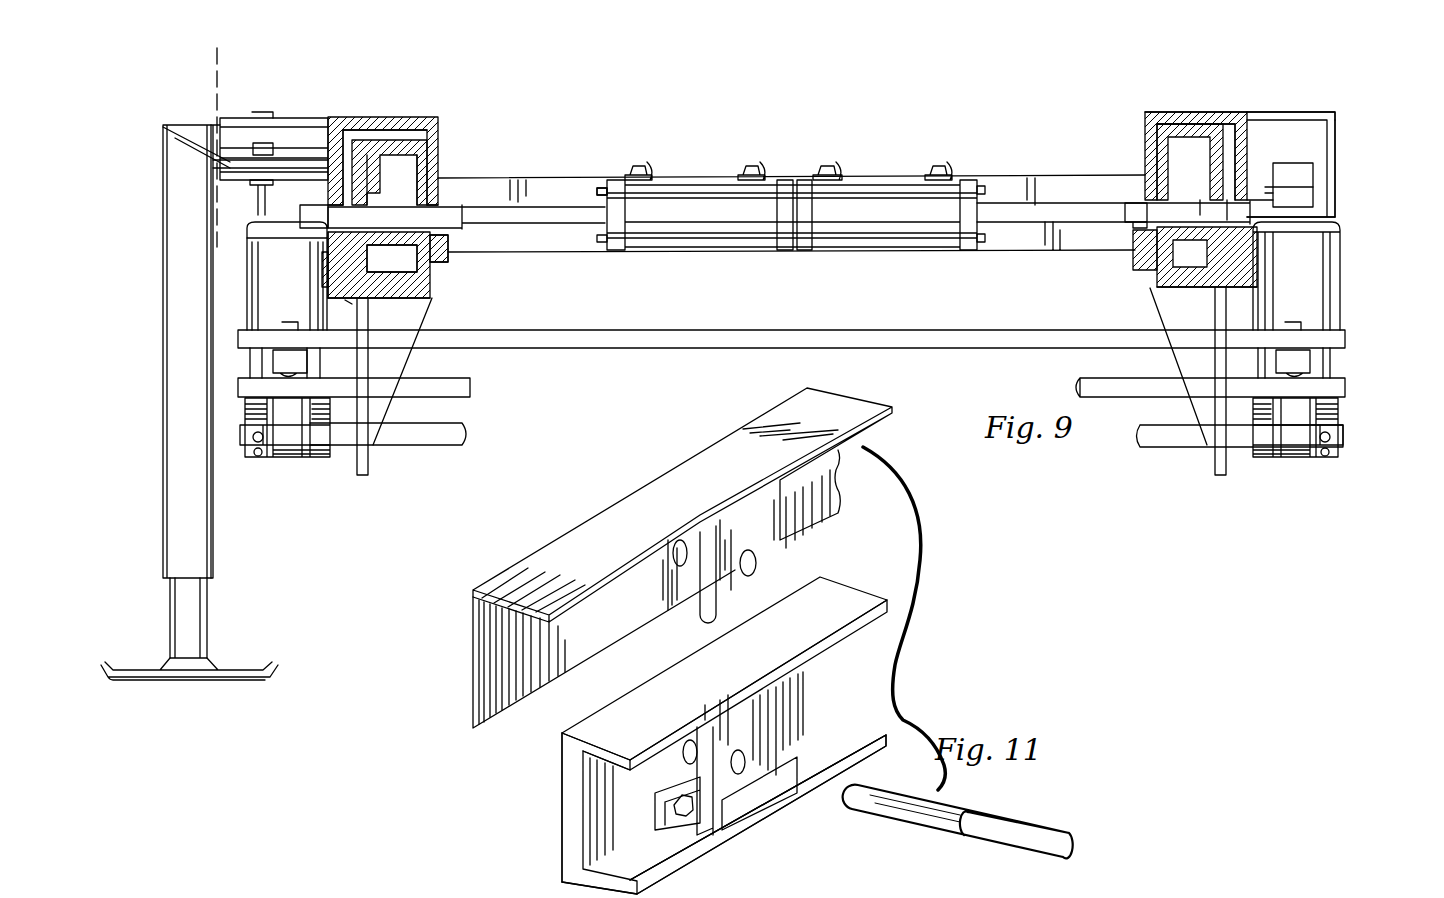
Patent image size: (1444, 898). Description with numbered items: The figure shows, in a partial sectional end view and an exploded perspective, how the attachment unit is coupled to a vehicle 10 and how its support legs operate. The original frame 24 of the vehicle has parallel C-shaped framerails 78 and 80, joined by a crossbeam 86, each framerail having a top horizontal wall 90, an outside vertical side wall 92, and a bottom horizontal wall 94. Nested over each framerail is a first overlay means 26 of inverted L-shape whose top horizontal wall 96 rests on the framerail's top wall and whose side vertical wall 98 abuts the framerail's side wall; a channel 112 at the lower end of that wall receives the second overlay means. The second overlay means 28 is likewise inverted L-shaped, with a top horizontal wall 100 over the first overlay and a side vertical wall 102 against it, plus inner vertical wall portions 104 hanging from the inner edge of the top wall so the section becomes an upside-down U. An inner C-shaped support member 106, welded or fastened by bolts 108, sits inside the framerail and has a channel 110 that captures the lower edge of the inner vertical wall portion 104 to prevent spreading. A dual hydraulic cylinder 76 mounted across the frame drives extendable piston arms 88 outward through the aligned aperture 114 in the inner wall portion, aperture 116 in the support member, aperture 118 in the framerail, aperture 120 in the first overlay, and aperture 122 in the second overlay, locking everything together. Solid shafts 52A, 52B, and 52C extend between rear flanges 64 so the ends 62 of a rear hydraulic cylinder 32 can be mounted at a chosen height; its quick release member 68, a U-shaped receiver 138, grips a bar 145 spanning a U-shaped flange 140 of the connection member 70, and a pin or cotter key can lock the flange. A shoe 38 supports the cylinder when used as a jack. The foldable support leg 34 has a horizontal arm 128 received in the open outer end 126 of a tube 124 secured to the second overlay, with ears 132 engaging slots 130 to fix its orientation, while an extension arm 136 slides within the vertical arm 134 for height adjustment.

In FIG. 9, the vehicle 10 is at (200, 66).
In FIG. 9, the original frame 24 is at (432, 142).
In FIG. 11, the original frame 24 is at (578, 820).
In FIG. 9, the first overlay means 26 is at (400, 118).
In FIG. 11, the first overlay means 26 is at (889, 598).
In FIG. 9, the second overlay means 28 is at (443, 118).
In FIG. 11, the second overlay means 28 is at (475, 733).
In FIG. 9, the rear hydraulic cylinder 32 is at (262, 468).
In FIG. 9, the foldable support leg 34 is at (158, 382).
In FIG. 9, the shoe 38 is at (162, 682).
In FIG. 9, the solid shaft 52A is at (620, 333).
In FIG. 9, the solid shaft 52B is at (465, 400).
In FIG. 9, the solid shaft 52C is at (423, 445).
In FIG. 9, the end of rear hydraulic cylinder 62 is at (265, 462).
In FIG. 9, the rear flange 64 is at (362, 477).
In FIG. 9, the quick release member 68 is at (1315, 185).
In FIG. 9, the connection member 70 is at (1340, 145).
In FIG. 9, the dual hydraulic cylinder 76 is at (747, 200).
In FIG. 9, the left framerail 78 is at (1160, 168).
In FIG. 9, the right framerail 80 is at (437, 173).
In FIG. 9, the crossbeam 86 is at (597, 247).
In FIG. 9, the extendable piston arm 88 is at (553, 217).
In FIG. 11, the extendable piston arm 88 is at (1002, 812).
In FIG. 9, the top horizontal wall 90 is at (437, 140).
In FIG. 11, the top horizontal wall 90 is at (582, 787).
In FIG. 9, the vertical side wall 92 is at (342, 291).
In FIG. 11, the vertical side wall 92 is at (582, 853).
In FIG. 9, the bottom horizontal wall 94 is at (447, 266).
In FIG. 9, the top horizontal wall 96 is at (367, 133).
In FIG. 11, the top horizontal wall 96 is at (838, 572).
In FIG. 9, the side vertical wall 98 is at (340, 160).
In FIG. 11, the side vertical wall 98 is at (562, 803).
In FIG. 9, the top horizontal wall 100 is at (378, 118).
In FIG. 11, the top horizontal wall 100 is at (600, 520).
In FIG. 9, the side vertical wall 102 is at (333, 274).
In FIG. 11, the side vertical wall 102 is at (473, 657).
In FIG. 9, the inner vertical wall portion 104 is at (420, 300).
In FIG. 11, the inner vertical wall portion 104 is at (717, 625).
In FIG. 9, the inner support member 106 is at (497, 178).
In FIG. 11, the inner support member 106 is at (742, 840).
In FIG. 11, the bolt 108 is at (686, 817).
In FIG. 9, the channel 110 is at (548, 250).
In FIG. 11, the channel 110 is at (738, 868).
In FIG. 9, the channel 112 is at (338, 302).
In FIG. 9, the aperture 114 is at (1133, 225).
In FIG. 11, the aperture 114 is at (757, 563).
In FIG. 9, the aperture 116 is at (1157, 253).
In FIG. 11, the aperture 116 is at (772, 805).
In FIG. 9, the aperture 118 is at (1200, 200).
In FIG. 11, the aperture 118 is at (700, 775).
In FIG. 9, the aperture 120 is at (1230, 220).
In FIG. 11, the aperture 120 is at (697, 735).
In FIG. 9, the aperture 122 is at (1250, 215).
In FIG. 11, the aperture 122 is at (680, 540).
In FIG. 9, the tube 124 is at (293, 195).
In FIG. 9, the outer end of tube 126 is at (228, 163).
In FIG. 9, the horizontal arm 128 is at (228, 127).
In FIG. 9, the slot 130 is at (200, 148).
In FIG. 9, the ear 132 is at (262, 144).
In FIG. 9, the vertical arm 134 is at (170, 300).
In FIG. 9, the extension arm 136 is at (180, 614).
In FIG. 9, the U-shaped receiver 138 is at (1303, 190).
In FIG. 9, the U-shaped flange 140 is at (1338, 115).
In FIG. 9, the bar 145 is at (1327, 220).